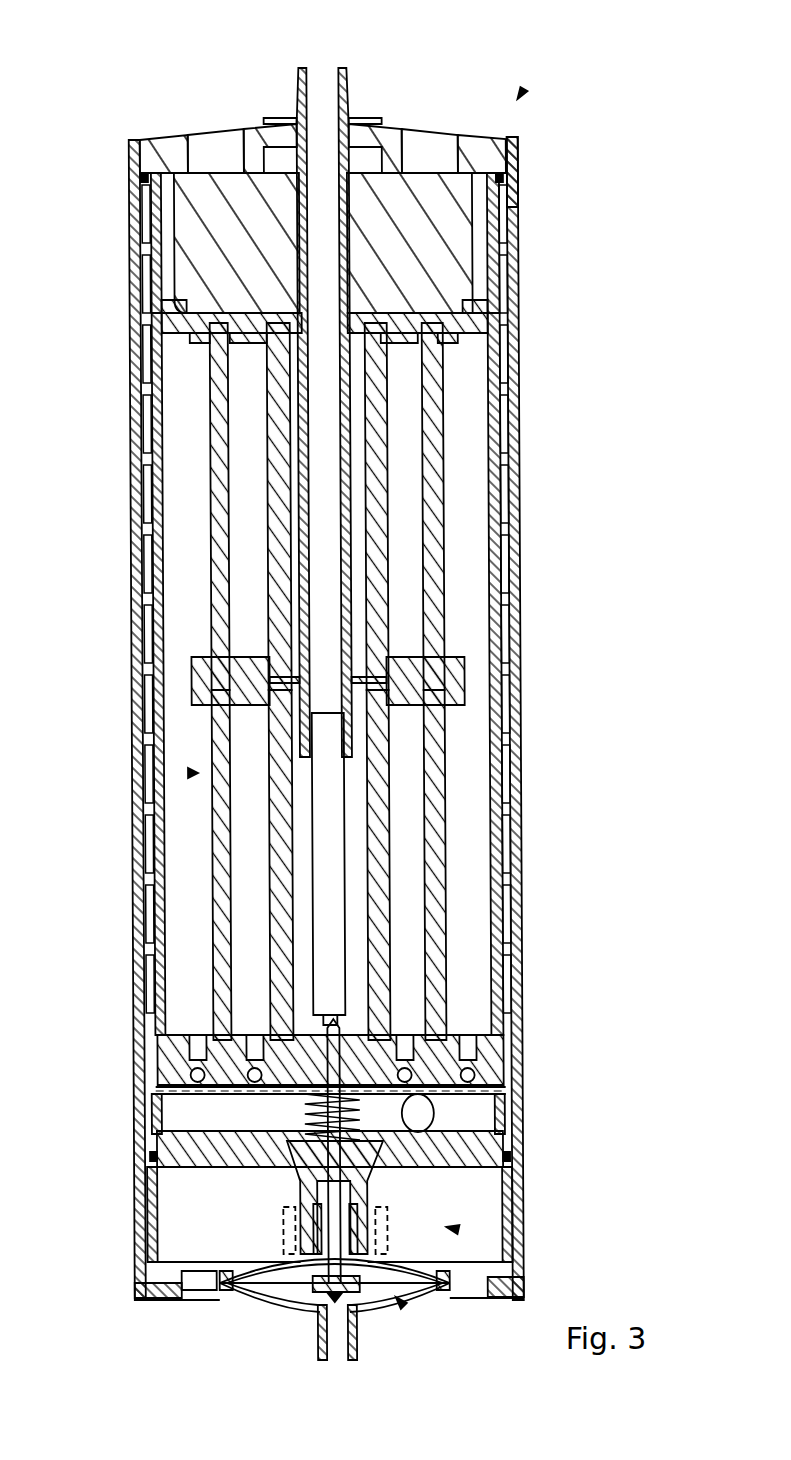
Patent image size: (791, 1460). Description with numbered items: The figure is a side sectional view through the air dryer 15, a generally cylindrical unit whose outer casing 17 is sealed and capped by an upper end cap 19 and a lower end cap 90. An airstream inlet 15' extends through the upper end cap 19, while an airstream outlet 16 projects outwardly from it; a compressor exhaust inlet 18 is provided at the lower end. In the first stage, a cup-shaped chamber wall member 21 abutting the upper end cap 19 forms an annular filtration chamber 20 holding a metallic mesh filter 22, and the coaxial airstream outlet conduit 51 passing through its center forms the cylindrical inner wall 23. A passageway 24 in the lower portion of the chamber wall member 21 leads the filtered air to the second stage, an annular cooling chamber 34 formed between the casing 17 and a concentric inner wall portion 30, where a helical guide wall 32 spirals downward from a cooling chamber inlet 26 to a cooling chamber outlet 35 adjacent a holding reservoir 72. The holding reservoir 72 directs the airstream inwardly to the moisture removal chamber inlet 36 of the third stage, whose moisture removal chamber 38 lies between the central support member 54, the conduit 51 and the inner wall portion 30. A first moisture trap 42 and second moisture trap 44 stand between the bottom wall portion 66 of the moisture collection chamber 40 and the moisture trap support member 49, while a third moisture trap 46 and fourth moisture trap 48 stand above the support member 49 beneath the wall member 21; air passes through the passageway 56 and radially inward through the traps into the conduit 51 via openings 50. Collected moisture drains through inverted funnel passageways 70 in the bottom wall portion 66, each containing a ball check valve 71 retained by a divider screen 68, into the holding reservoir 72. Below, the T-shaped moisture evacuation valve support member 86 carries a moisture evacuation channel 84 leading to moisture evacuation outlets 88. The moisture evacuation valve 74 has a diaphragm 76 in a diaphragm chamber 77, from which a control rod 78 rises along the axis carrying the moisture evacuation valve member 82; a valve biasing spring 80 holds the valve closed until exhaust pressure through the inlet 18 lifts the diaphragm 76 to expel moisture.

The air dryer 15 is at (339, 698).
The airstream inlet 15' is at (218, 102).
The airstream outlet 16 is at (323, 78).
The outer casing 17 is at (126, 213).
The compressor exhaust inlet 18 is at (324, 1337).
The upper end cap 19 is at (160, 142).
The filtration chamber 20 is at (452, 118).
The chamber wall member 21 is at (166, 257).
The metallic mesh filter 22 is at (514, 179).
The cylindrical inner wall 23 is at (372, 205).
The passageway 24 is at (456, 220).
The cooling chamber inlet 26 is at (517, 298).
The inner wall portion 30 is at (517, 357).
The helical guide wall 32 is at (517, 391).
The annular cooling chamber 34 is at (516, 475).
The cooling chamber outlet 35 is at (219, 1125).
The moisture removal chamber inlet 36 is at (270, 1047).
The moisture removal chamber 38 is at (186, 773).
The moisture collection chamber 40 is at (240, 958).
The first moisture trap 42 is at (272, 877).
The second moisture trap 44 is at (212, 740).
The third moisture trap 46 is at (216, 480).
The fourth moisture trap 48 is at (278, 423).
The moisture trap support member 49 is at (208, 650).
The openings 50 is at (156, 293).
The airstream outlet conduit 51 is at (140, 137).
The central support member 54 is at (320, 847).
The passageway 56 is at (180, 627).
The bottom wall portion 66 is at (203, 1083).
The divider screen 68 is at (500, 1085).
The passageways 70 is at (462, 1040).
The ball check valves 71 is at (473, 1035).
The holding reservoir 72 is at (136, 1154).
The moisture evacuation valve 74 is at (442, 1228).
The diaphragm 76 is at (441, 1283).
The diaphragm chamber 77 is at (389, 1305).
The moisture evacuation valve control rod 78 is at (334, 1150).
The valve biasing spring 80 is at (317, 1203).
The moisture evacuation valve member 82 is at (381, 1200).
The moisture evacuation channel 84 is at (323, 1218).
The moisture evacuation valve support member 86 is at (510, 1143).
The moisture evacuation outlets 88 is at (188, 1296).
The lower end cap 90 is at (158, 1300).